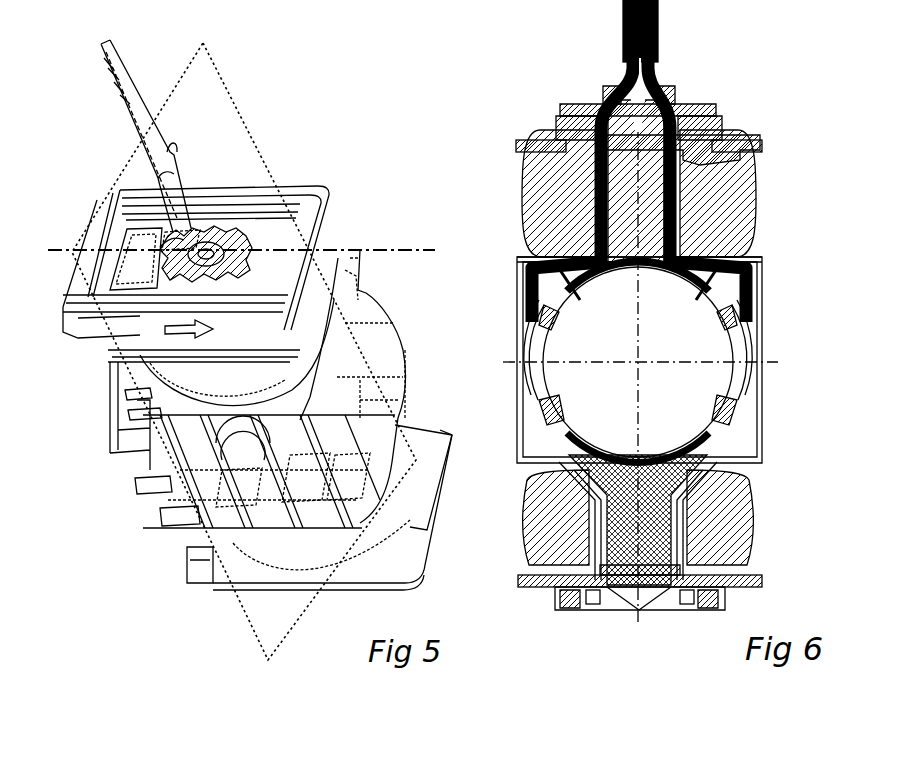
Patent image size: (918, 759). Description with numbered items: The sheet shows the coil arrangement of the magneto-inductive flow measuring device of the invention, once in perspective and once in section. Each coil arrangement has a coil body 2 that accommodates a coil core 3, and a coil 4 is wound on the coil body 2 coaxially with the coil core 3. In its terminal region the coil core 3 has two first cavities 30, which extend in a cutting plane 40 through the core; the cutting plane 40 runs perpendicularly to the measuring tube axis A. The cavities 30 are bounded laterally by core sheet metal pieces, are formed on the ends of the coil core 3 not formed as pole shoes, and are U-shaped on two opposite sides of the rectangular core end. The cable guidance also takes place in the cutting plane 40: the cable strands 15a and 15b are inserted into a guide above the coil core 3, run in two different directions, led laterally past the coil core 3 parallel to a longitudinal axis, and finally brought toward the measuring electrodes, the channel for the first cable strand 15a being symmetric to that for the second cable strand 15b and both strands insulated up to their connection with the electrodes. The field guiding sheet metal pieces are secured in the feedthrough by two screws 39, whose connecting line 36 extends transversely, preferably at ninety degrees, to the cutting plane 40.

In FIG. 5, the coil body 2 is at (330, 268).
In FIG. 6, the coil core 3 is at (680, 135).
In FIG. 6, the coil 4 is at (713, 170).
In FIG. 6, the first cable strand 15a is at (552, 145).
In FIG. 6, the second cable strand 15b is at (700, 200).
In FIG. 5, the first cavity 30 is at (240, 180).
In FIG. 6, the first cavity 30 is at (606, 603).
In FIG. 5, the connecting line 36 is at (249, 219).
In FIG. 5, the screw 39 is at (200, 248).
In FIG. 5, the cutting plane 40 is at (222, 106).
In FIG. 6, the measuring tube axis A is at (655, 372).